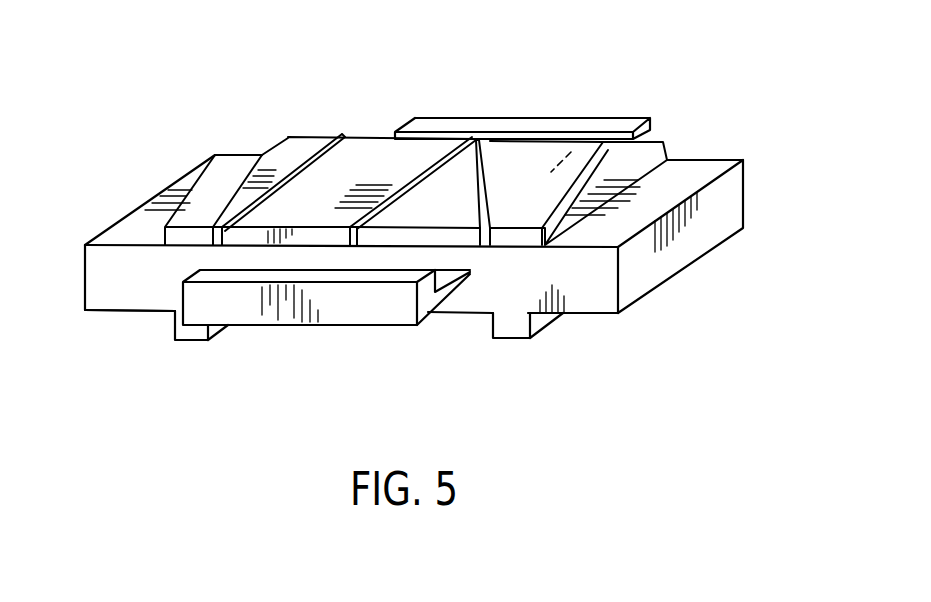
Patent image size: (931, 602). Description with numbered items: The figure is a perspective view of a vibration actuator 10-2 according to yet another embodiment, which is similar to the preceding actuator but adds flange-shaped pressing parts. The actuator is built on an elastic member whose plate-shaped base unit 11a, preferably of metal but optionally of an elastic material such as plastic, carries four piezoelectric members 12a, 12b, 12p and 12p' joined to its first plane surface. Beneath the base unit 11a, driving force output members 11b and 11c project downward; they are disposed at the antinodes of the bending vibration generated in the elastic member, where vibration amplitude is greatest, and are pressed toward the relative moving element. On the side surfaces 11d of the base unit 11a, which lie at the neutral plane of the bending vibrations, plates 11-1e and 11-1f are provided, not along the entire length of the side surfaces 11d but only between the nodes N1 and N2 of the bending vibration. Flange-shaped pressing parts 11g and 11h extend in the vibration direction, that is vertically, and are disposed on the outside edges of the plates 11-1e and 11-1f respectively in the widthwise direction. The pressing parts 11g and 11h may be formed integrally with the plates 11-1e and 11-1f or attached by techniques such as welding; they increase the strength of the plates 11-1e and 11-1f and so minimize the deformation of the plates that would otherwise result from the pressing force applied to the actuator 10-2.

The vibration actuator 10-2 is at (443, 90).
The elastic member base unit 11a is at (696, 235).
The driving force output member 11b is at (190, 330).
The driving force output member 11c is at (513, 327).
The side surface 11d is at (700, 197).
The pressing part 11g is at (427, 296).
The pressing part 11h is at (635, 133).
The plate 11-1e is at (450, 297).
The plate 11-1f is at (574, 148).
The piezoelectric member 12p is at (255, 159).
The piezoelectric member 12p' is at (649, 176).
The piezoelectric member 12a is at (368, 163).
The piezoelectric member 12b is at (525, 163).
The node N1 is at (186, 278).
The node N2 is at (475, 275).